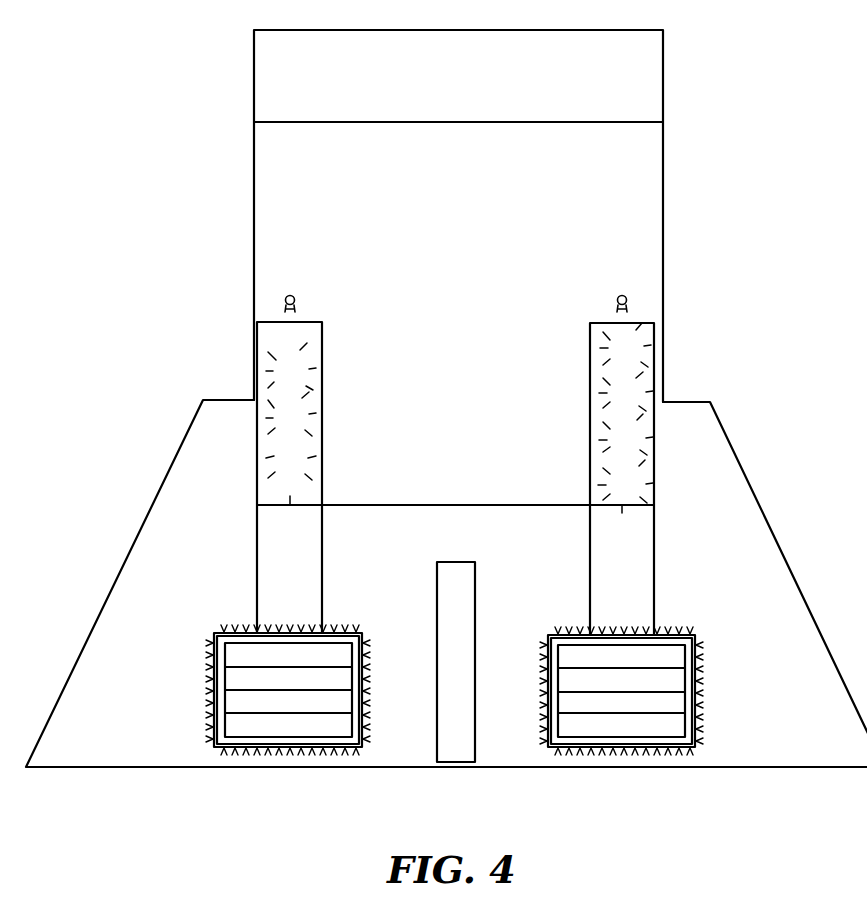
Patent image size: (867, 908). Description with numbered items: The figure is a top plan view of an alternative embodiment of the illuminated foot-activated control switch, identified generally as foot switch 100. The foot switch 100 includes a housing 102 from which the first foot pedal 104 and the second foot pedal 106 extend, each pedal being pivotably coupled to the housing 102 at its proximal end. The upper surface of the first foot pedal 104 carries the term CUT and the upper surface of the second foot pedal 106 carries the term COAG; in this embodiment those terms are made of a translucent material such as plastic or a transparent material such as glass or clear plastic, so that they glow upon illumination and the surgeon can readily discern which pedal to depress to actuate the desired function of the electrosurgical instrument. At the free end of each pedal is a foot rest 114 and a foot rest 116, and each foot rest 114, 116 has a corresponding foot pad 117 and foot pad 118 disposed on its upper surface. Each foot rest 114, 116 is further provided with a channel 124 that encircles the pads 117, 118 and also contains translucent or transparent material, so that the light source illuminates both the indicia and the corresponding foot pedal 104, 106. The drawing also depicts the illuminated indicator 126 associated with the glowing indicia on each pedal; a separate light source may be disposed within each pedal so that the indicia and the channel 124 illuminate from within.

The foot switch 100 is at (143, 226).
The housing 102 is at (637, 193).
The first foot pedal 104 is at (280, 566).
The second foot pedal 106 is at (631, 565).
The foot rest 114 is at (213, 718).
The foot rest 116 is at (687, 722).
The foot pad 117 is at (305, 727).
The foot pad 118 is at (663, 727).
The channel 124 is at (238, 748).
The illuminated indicator 126 is at (277, 344).